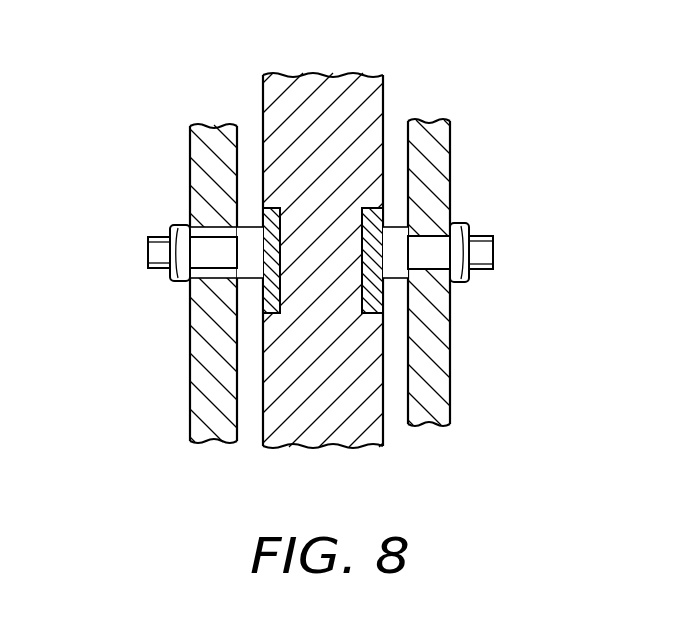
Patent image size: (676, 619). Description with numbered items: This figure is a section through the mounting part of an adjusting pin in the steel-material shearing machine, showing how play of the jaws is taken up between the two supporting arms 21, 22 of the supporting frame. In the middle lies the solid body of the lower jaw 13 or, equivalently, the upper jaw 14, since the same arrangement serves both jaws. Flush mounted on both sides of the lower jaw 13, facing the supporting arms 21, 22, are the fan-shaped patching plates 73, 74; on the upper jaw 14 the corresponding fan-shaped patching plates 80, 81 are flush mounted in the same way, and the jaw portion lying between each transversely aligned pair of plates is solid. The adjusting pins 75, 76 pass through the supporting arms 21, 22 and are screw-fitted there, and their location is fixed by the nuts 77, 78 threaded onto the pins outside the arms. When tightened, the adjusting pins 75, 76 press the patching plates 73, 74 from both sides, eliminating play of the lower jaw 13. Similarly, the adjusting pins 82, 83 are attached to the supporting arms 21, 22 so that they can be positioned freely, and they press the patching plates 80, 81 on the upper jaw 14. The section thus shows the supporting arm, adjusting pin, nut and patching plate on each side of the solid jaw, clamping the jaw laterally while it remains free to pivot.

The lower jaw 13 is at (332, 228).
The upper jaw 14 is at (322, 76).
The supporting arm 21 is at (432, 427).
The supporting arm 22 is at (220, 444).
The patching plate 73 is at (428, 191).
The patching plate 80 is at (380, 216).
The patching plate 74 is at (222, 190).
The patching plate 81 is at (266, 216).
The adjusting pin 75 is at (470, 279).
The adjusting pin 82 is at (396, 267).
The adjusting pin 76 is at (166, 280).
The adjusting pin 83 is at (252, 263).
The nut 77 is at (458, 252).
The nut 78 is at (181, 246).